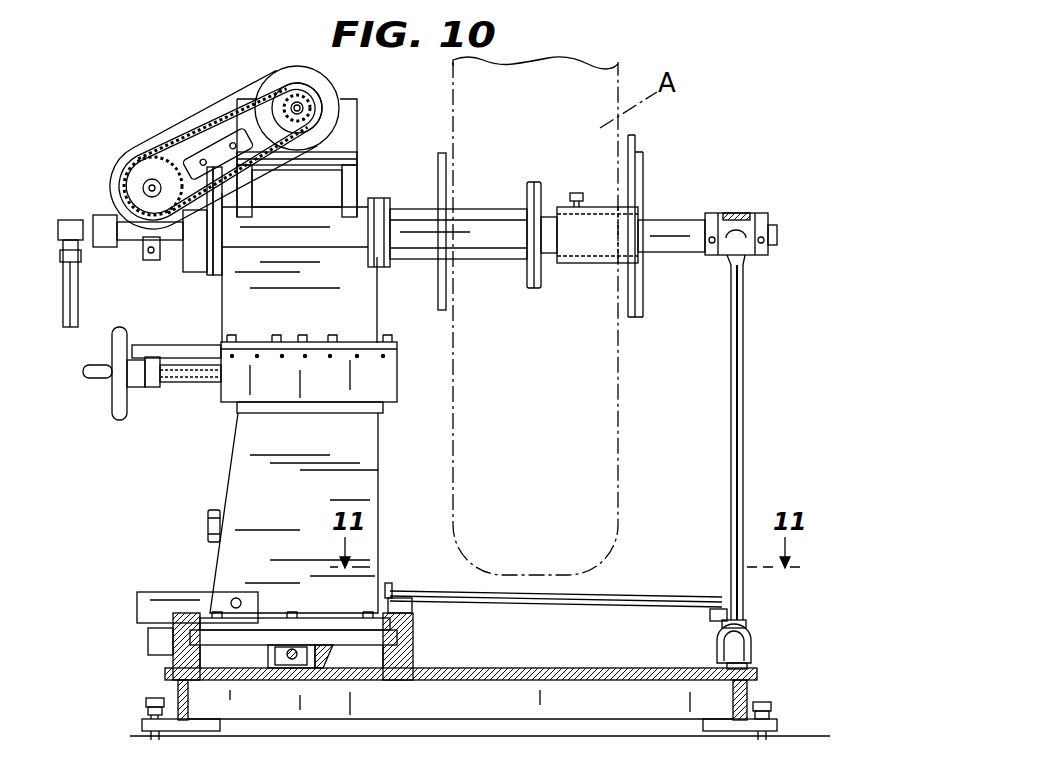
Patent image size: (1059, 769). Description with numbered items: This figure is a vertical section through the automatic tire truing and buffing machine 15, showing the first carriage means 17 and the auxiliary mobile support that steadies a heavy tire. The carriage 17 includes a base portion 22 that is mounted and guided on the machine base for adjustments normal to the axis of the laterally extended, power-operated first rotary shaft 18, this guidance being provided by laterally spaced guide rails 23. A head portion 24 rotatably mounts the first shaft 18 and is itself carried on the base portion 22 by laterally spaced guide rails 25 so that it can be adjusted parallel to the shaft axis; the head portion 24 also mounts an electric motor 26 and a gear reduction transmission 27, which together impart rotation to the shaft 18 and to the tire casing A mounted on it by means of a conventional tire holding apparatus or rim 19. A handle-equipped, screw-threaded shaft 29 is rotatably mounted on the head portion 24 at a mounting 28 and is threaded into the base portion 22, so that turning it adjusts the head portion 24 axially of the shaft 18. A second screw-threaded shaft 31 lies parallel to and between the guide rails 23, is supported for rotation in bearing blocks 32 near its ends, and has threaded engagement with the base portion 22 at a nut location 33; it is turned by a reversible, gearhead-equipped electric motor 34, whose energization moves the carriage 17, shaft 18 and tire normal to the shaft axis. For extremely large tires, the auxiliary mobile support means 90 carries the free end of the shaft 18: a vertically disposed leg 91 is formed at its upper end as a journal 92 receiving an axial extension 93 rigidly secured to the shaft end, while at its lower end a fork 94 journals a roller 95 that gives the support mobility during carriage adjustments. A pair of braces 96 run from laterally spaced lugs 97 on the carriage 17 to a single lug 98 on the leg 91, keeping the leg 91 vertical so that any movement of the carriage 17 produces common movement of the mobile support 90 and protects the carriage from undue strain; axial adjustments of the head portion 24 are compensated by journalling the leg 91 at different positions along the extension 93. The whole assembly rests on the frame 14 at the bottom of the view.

The base frame 14 is at (520, 714).
The automatic tire truing and buffing machine 15 is at (716, 110).
The first carriage means 17 is at (218, 474).
The first rotary shaft 18 is at (408, 218).
The tire holding apparatus or rim 19 is at (643, 168).
The base portion 22 is at (228, 557).
The guide rails 23 is at (166, 656).
The head portion 24 is at (352, 303).
The guide rails 25 is at (320, 341).
The electric motor 26 is at (291, 66).
The gear reduction transmission 27 is at (150, 286).
The rotatable mounting 28 is at (157, 388).
The handle-equipped screw-threaded shaft 29 is at (210, 382).
The screw-threaded shaft 31 is at (293, 660).
The bearing blocks 32 is at (268, 652).
The threaded engagement 33 is at (300, 648).
The reversible gearhead-equipped electric motor 34 is at (206, 516).
The auxiliary mobile support means 90 is at (750, 426).
The leg 91 is at (744, 380).
The journal 92 is at (745, 216).
The axial extension 93 is at (662, 232).
The fork 94 is at (755, 636).
The roller 95 is at (752, 661).
The braces 96 is at (638, 596).
The lugs 97 is at (403, 598).
The lug 98 is at (712, 620).